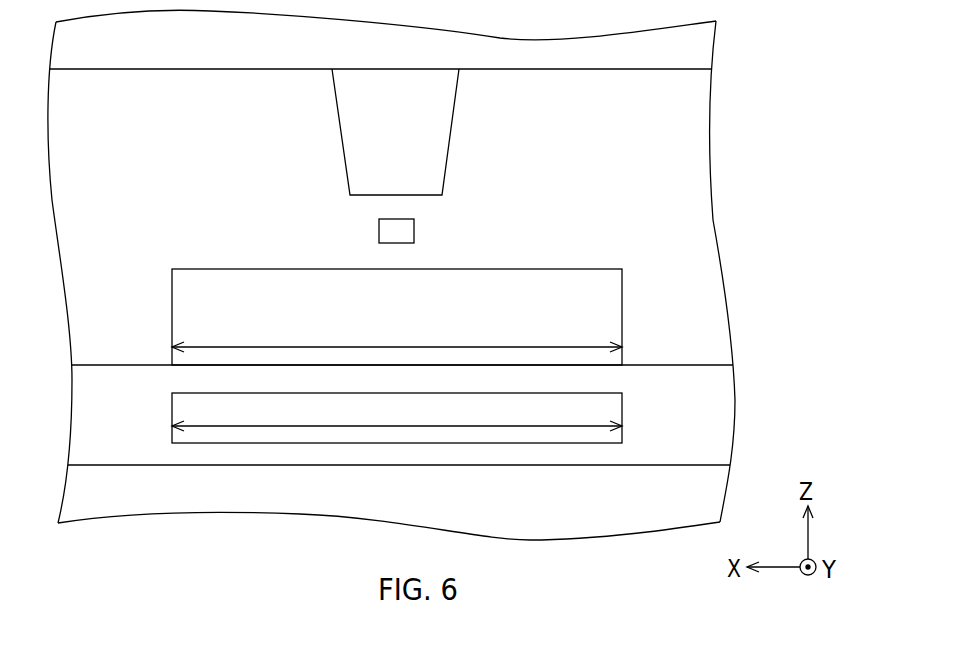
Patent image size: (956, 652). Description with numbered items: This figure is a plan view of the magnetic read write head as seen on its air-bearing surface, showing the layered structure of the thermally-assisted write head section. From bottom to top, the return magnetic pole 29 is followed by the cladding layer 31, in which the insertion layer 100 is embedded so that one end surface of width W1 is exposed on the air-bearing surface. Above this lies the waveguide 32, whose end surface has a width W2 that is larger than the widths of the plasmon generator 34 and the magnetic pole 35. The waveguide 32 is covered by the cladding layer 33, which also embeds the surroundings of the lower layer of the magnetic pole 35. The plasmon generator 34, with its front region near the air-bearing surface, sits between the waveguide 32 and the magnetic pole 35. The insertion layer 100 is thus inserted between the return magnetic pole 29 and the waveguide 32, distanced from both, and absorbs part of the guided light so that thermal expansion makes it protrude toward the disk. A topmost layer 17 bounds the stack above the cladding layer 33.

The upper shield layer 17 is at (700, 46).
The return magnetic pole 29 is at (713, 497).
The cladding layer 31 is at (718, 380).
The waveguide 32 is at (611, 313).
The cladding layer 33 is at (696, 182).
The plasmon generator 34 is at (403, 231).
The magnetic pole 35 is at (437, 130).
The insertion layer 100 is at (611, 413).